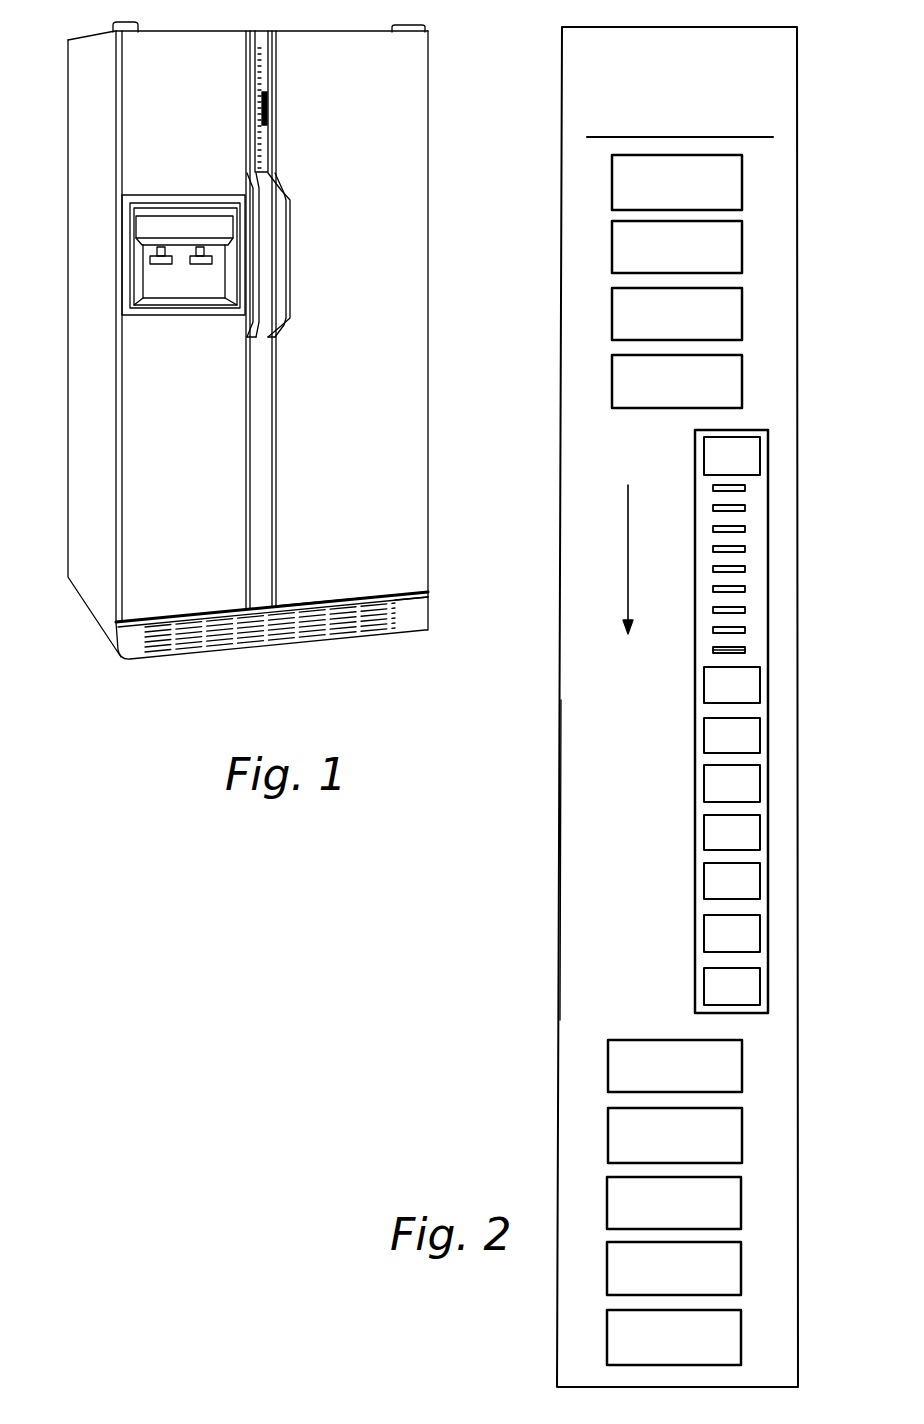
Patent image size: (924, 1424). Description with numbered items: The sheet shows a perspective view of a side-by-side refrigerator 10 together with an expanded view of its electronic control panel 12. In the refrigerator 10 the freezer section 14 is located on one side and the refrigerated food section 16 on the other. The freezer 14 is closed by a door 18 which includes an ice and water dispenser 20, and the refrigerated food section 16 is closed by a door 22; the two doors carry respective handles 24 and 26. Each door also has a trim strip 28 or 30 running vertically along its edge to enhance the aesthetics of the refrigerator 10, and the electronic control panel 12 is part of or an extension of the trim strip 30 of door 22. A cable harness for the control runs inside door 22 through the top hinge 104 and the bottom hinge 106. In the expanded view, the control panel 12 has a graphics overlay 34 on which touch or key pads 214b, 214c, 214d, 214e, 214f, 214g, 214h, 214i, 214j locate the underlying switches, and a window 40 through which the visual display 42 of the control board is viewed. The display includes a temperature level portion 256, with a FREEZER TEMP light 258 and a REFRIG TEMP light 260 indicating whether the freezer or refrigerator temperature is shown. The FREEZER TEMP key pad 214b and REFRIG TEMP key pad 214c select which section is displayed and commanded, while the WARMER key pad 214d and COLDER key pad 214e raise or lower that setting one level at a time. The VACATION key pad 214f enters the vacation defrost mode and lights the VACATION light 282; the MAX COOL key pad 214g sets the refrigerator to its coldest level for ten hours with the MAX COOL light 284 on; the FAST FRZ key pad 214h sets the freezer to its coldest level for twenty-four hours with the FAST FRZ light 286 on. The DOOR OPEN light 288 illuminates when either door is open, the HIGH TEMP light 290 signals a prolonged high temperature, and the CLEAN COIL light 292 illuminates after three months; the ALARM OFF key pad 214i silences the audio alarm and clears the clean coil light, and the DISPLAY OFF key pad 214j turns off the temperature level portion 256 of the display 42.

In FIG. 1, the side-by-side refrigerator 10 is at (155, 676).
In FIG. 1, the electronic control panel 12 is at (263, 135).
In FIG. 2, the electronic control panel 12 is at (544, 973).
In FIG. 1, the freezer section 14 is at (177, 110).
In FIG. 1, the refrigerated food section 16 is at (370, 514).
In FIG. 1, the door 18 is at (150, 418).
In FIG. 1, the ice and water dispenser 20 is at (165, 313).
In FIG. 1, the door 22 is at (412, 393).
In FIG. 1, the handle 24 is at (248, 322).
In FIG. 1, the handle 26 is at (288, 248).
In FIG. 1, the trim strip 28 is at (247, 458).
In FIG. 1, the trim strip 30 is at (277, 455).
In FIG. 2, the graphics overlay 34 is at (560, 892).
In FIG. 2, the window 40 is at (768, 808).
In FIG. 2, the visual display 42 is at (745, 661).
In FIG. 1, the top hinge 104 is at (425, 25).
In FIG. 1, the bottom hinge 106 is at (412, 622).
In FIG. 2, the FREEZER TEMP key pad 214b is at (742, 190).
In FIG. 2, the REFRIG TEMP key pad 214c is at (742, 250).
In FIG. 2, the WARMER key pad 214d is at (742, 313).
In FIG. 2, the COLDER key pad 214e is at (742, 385).
In FIG. 2, the VACATION key pad 214f is at (742, 1068).
In FIG. 2, the MAX COOL key pad 214g is at (742, 1138).
In FIG. 2, the FAST FRZ key pad 214h is at (741, 1200).
In FIG. 2, the ALARM OFF key pad 214i is at (741, 1270).
In FIG. 2, the DISPLAY OFF key pad 214j is at (741, 1337).
In FIG. 2, the temperature level portion 256 is at (751, 480).
In FIG. 2, the FREEZER TEMP light 258 is at (760, 455).
In FIG. 2, the REFRIG TEMP light 260 is at (760, 686).
In FIG. 2, the VACATION light 282 is at (760, 880).
In FIG. 2, the MAX COOL light 284 is at (760, 930).
In FIG. 2, the FAST FRZ light 286 is at (760, 985).
In FIG. 2, the DOOR OPEN light 288 is at (760, 733).
In FIG. 2, the HIGH TEMP light 290 is at (760, 782).
In FIG. 2, the CLEAN COIL light 292 is at (760, 832).